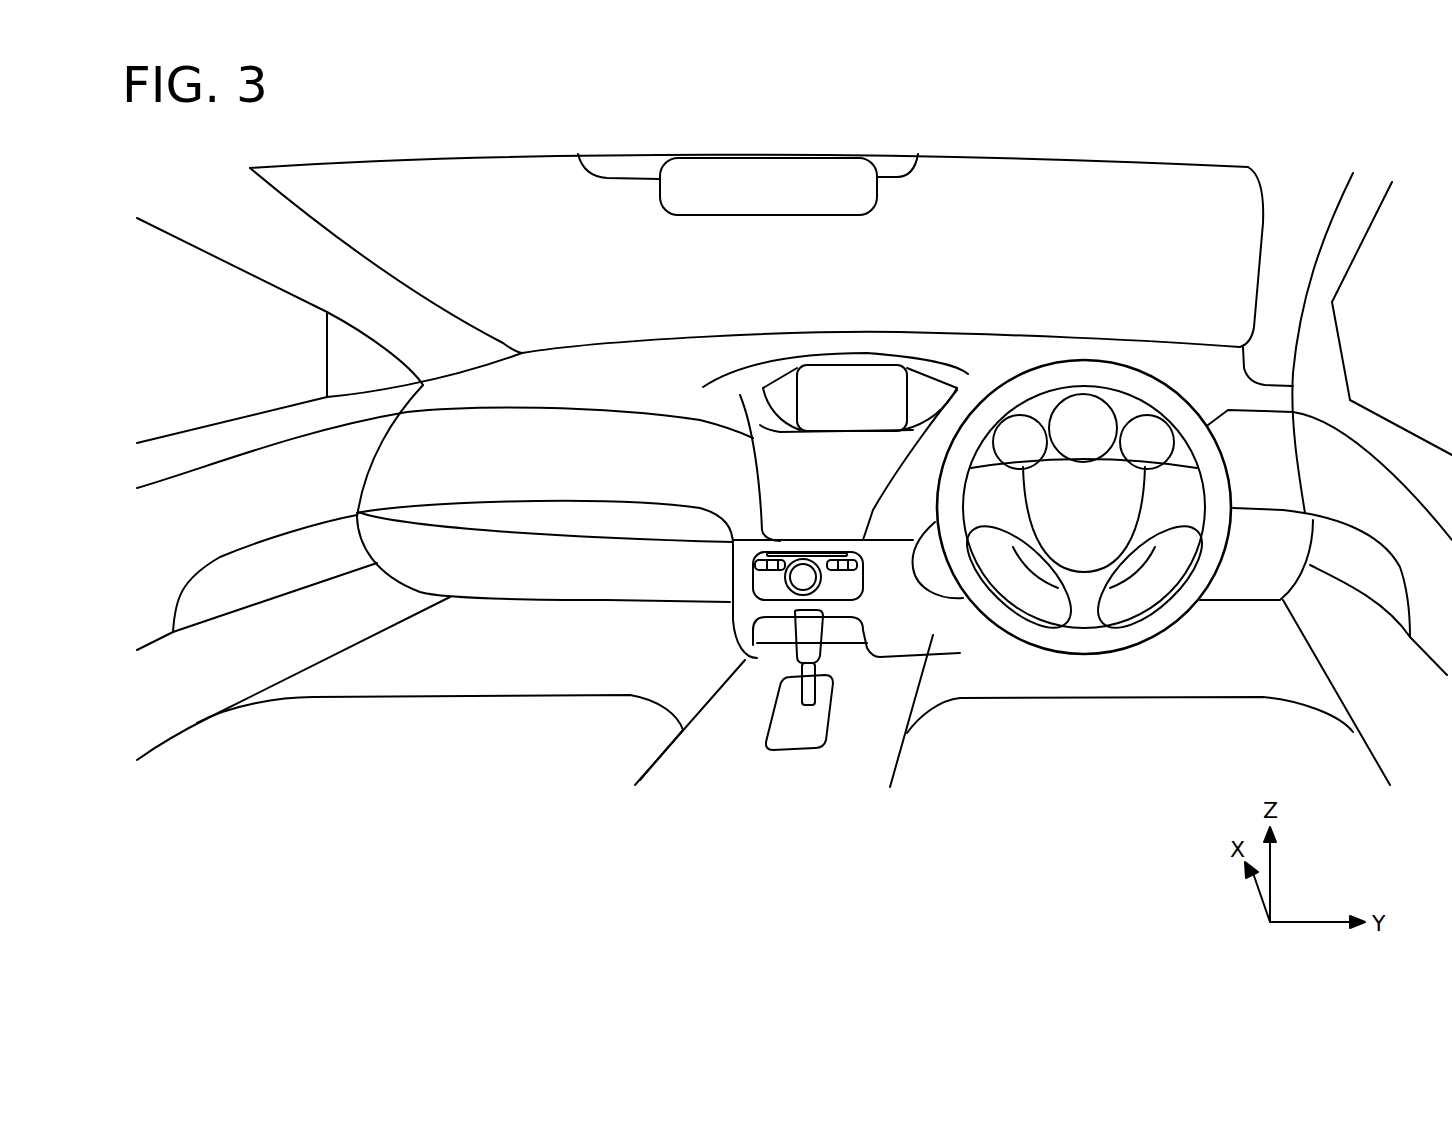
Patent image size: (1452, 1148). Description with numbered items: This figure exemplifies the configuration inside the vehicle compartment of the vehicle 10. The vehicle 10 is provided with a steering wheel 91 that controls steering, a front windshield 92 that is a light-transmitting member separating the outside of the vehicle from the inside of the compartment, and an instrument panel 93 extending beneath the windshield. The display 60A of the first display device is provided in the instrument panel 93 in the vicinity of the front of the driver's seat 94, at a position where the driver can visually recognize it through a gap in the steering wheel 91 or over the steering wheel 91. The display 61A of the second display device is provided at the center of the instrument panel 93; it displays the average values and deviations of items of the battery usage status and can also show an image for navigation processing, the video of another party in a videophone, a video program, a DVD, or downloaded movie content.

The vehicle 10 is at (673, 661).
The display 60A is at (1085, 421).
The display 61A is at (874, 413).
The steering wheel 91 is at (1170, 627).
The front windshield 92 is at (864, 284).
The instrument panel 93 is at (696, 376).
The driver's seat 94 is at (1146, 762).